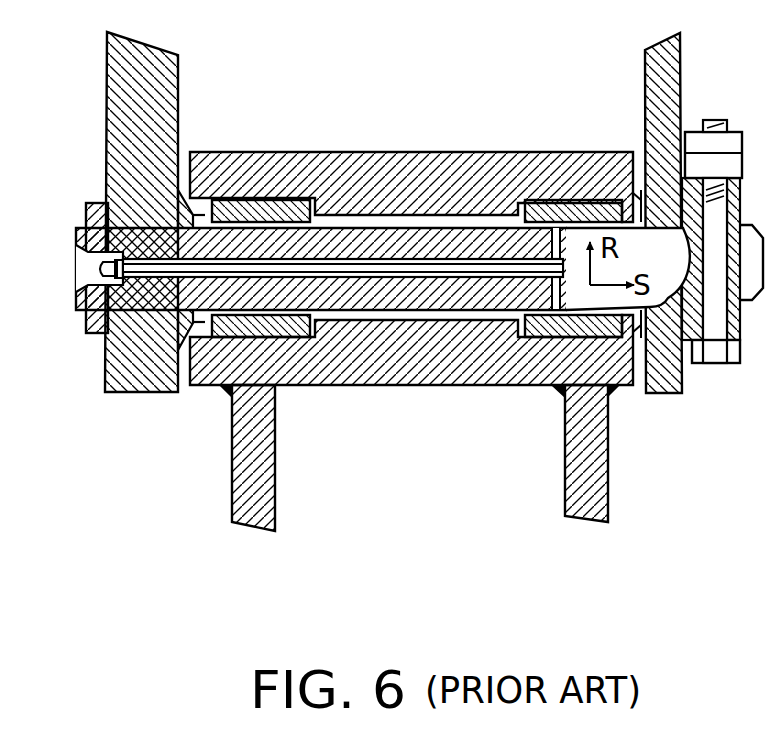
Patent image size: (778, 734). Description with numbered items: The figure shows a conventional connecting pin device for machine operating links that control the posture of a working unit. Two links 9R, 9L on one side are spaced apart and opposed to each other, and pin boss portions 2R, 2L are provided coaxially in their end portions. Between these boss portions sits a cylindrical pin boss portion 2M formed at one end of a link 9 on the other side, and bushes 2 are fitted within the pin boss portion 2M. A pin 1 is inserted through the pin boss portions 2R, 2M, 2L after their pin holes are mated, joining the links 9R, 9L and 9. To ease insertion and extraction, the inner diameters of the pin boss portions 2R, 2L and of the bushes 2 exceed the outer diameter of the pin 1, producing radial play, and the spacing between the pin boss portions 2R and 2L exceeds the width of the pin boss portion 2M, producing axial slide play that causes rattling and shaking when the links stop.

The pin 1 is at (77, 262).
The bushes 2 is at (280, 200).
The pin boss portion 2L is at (150, 222).
The cylindrical pin boss portion 2M is at (425, 152).
The pin boss portion 2R is at (641, 190).
The link 9 is at (563, 505).
The link 9L is at (140, 395).
The link 9R is at (667, 395).